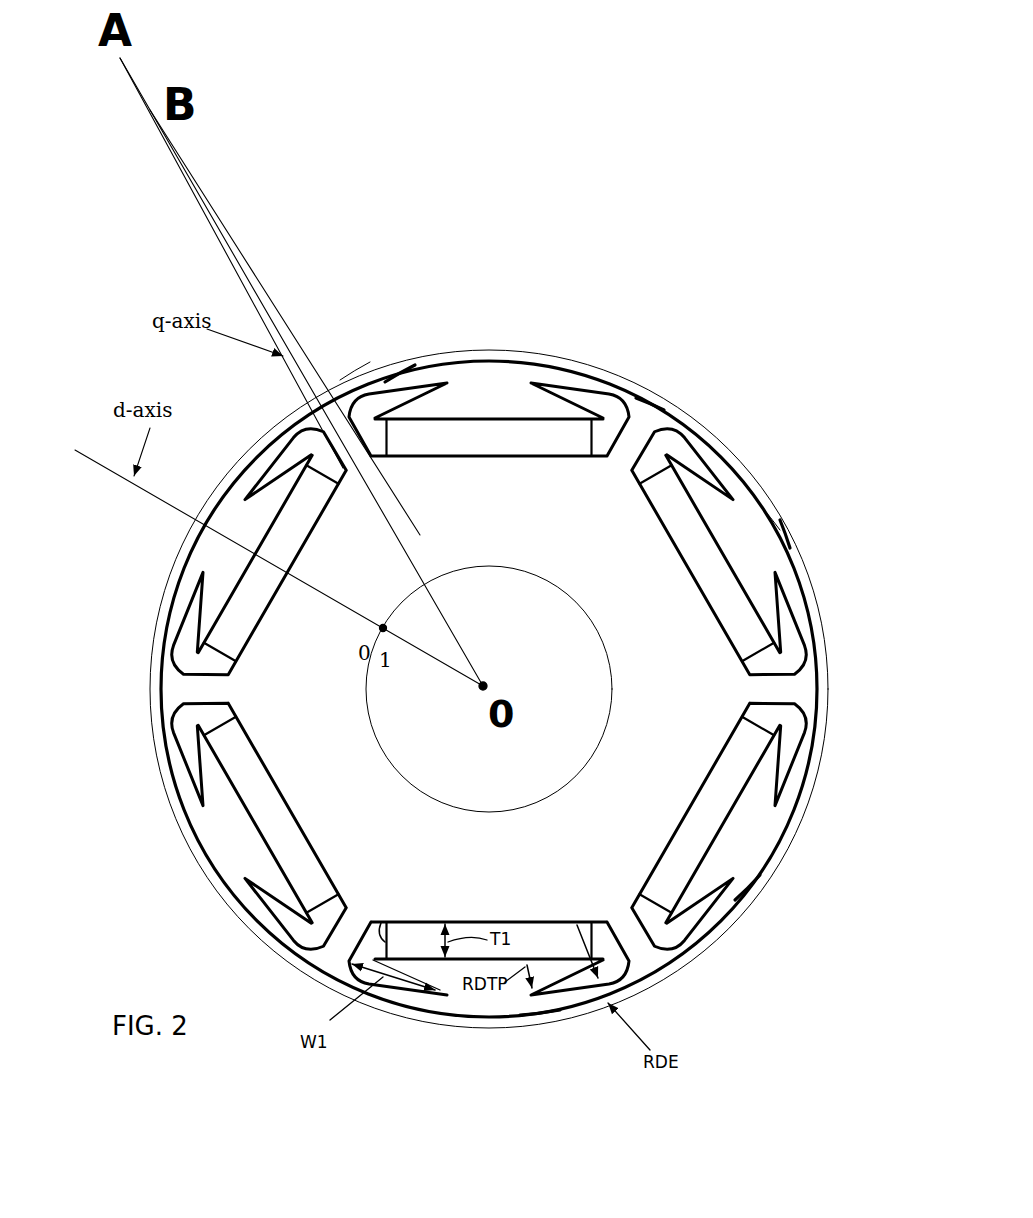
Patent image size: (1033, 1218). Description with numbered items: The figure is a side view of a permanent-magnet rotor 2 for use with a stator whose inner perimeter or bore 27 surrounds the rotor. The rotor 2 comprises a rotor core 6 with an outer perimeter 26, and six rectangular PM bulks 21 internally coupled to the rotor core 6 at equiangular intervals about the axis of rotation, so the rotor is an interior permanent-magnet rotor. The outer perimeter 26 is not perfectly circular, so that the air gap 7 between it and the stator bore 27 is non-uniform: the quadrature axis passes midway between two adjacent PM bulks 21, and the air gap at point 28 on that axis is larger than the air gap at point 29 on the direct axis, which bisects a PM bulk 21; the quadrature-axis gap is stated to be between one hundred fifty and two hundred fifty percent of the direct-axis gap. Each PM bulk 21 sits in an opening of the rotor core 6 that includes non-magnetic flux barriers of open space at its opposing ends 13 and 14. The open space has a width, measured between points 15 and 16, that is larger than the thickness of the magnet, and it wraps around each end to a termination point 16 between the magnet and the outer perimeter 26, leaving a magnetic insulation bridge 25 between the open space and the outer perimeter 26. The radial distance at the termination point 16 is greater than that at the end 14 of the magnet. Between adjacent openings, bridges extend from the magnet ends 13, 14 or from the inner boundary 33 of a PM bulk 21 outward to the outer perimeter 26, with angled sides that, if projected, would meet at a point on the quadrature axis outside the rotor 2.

The rotor 2 is at (660, 968).
The rotor core 6 is at (686, 708).
The air gap 7 is at (717, 445).
The end of PM bulk 13 is at (381, 921).
The end of PM bulk 14 is at (595, 923).
The point of flux barrier open space 15 is at (347, 963).
The termination point 16 is at (448, 996).
The PM bulks 21 is at (708, 565).
The magnetic insulation bridge 25 is at (553, 1002).
The outer perimeter 26 is at (398, 373).
The inner perimeter 27 is at (353, 377).
The point on q-axis 28 is at (650, 402).
The point on d-axis 29 is at (773, 515).
The inner boundary of PM bulk 33 is at (472, 921).